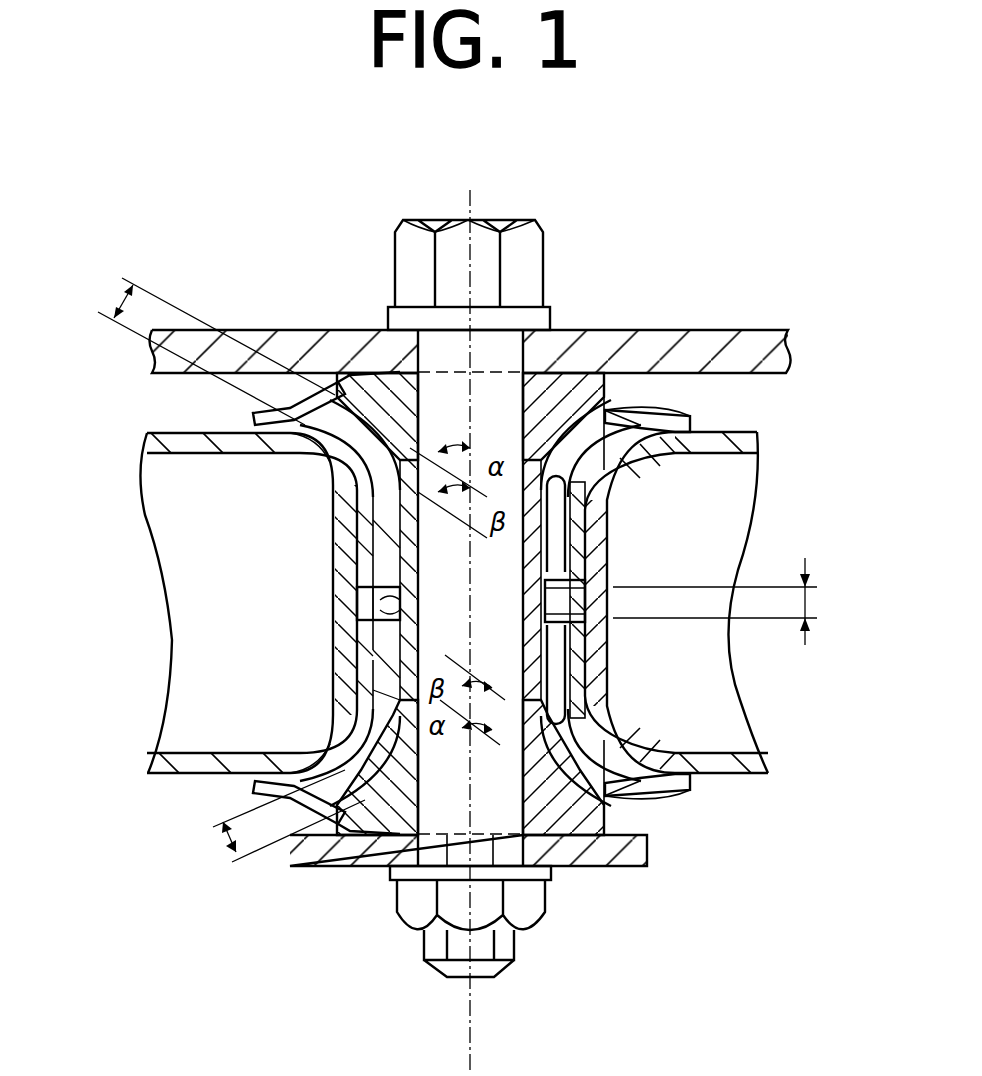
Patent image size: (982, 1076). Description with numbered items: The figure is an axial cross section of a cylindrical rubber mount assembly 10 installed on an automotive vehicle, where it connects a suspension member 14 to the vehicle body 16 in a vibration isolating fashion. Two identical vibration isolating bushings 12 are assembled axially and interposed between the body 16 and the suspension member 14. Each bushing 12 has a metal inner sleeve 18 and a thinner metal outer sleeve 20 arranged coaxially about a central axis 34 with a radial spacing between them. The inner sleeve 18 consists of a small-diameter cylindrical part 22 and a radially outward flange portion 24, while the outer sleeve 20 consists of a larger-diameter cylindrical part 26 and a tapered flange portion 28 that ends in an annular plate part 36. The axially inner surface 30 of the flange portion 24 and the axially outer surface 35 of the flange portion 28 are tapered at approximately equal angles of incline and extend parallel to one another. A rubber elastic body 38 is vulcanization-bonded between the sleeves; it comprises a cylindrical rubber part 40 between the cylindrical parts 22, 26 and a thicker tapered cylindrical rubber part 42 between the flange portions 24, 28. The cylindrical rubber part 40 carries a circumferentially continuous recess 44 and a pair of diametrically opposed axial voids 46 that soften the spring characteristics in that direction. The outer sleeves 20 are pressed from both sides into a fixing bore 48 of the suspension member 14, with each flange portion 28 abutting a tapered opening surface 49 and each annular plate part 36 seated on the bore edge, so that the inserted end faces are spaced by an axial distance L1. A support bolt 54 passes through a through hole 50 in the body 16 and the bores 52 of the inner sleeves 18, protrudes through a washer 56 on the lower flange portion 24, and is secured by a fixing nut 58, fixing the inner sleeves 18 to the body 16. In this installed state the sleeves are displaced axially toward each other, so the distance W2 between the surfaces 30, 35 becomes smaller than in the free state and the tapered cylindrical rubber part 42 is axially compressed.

The cylindrical rubber mount assembly 10 is at (688, 386).
The vibration isolating bushing 12 is at (625, 382).
The suspension member 14 is at (195, 773).
The body 16 is at (288, 338).
The inner sleeve 18 is at (378, 362).
The outer sleeve 20 is at (598, 529).
The cylindrical part 22 is at (147, 433).
The flange portion 24 is at (550, 387).
The cylindrical part 26 is at (357, 533).
The flange portion 28 is at (300, 452).
The axially inner surface 30 is at (588, 455).
The central axis 34 is at (503, 213).
The axially outer surface 35 is at (640, 418).
The annular plate part 36 is at (285, 418).
The rubber elastic body 38 is at (335, 505).
The cylindrical rubber part 40 is at (400, 552).
The tapered cylindrical rubber part 42 is at (320, 397).
The recess 44 is at (357, 593).
The void 46 is at (558, 518).
The fixing bore 48 is at (583, 610).
The tapered opening surface 49 is at (618, 430).
The through hole 50 is at (425, 345).
The bore 52 is at (538, 322).
The support bolt 54 is at (453, 237).
The washer 56 is at (335, 866).
The fixing nut 58 is at (535, 913).
The distance W2 is at (218, 576).
The axial distance L1 is at (736, 601).